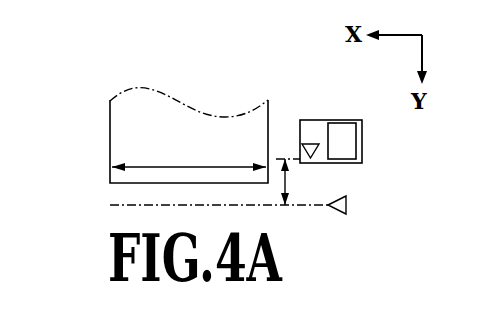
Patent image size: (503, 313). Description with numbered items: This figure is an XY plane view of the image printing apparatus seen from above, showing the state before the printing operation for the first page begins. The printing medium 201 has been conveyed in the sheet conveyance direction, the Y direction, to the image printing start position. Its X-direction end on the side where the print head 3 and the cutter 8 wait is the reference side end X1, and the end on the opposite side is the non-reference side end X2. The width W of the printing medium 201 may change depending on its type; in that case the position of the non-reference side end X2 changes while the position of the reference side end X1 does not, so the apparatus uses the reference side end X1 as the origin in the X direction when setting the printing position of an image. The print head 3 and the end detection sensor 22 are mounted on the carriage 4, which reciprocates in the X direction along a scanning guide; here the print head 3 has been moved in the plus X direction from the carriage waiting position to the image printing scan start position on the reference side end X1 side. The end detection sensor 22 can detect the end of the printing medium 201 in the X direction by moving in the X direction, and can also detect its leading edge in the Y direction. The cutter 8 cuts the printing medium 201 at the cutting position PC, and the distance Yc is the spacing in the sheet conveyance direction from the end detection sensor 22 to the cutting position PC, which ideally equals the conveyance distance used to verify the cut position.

The printing medium 201 is at (176, 131).
The end detection sensor 22 is at (310, 144).
The print head 3 is at (345, 147).
The carriage 4 is at (362, 146).
The cutter 8 is at (346, 198).
The width dimension W is at (189, 154).
The distance from the end detection sensor to the cutting position Yc is at (302, 182).
The cutting position PC is at (110, 205).
The reference side end X1 is at (272, 112).
The non-reference side end X2 is at (108, 102).